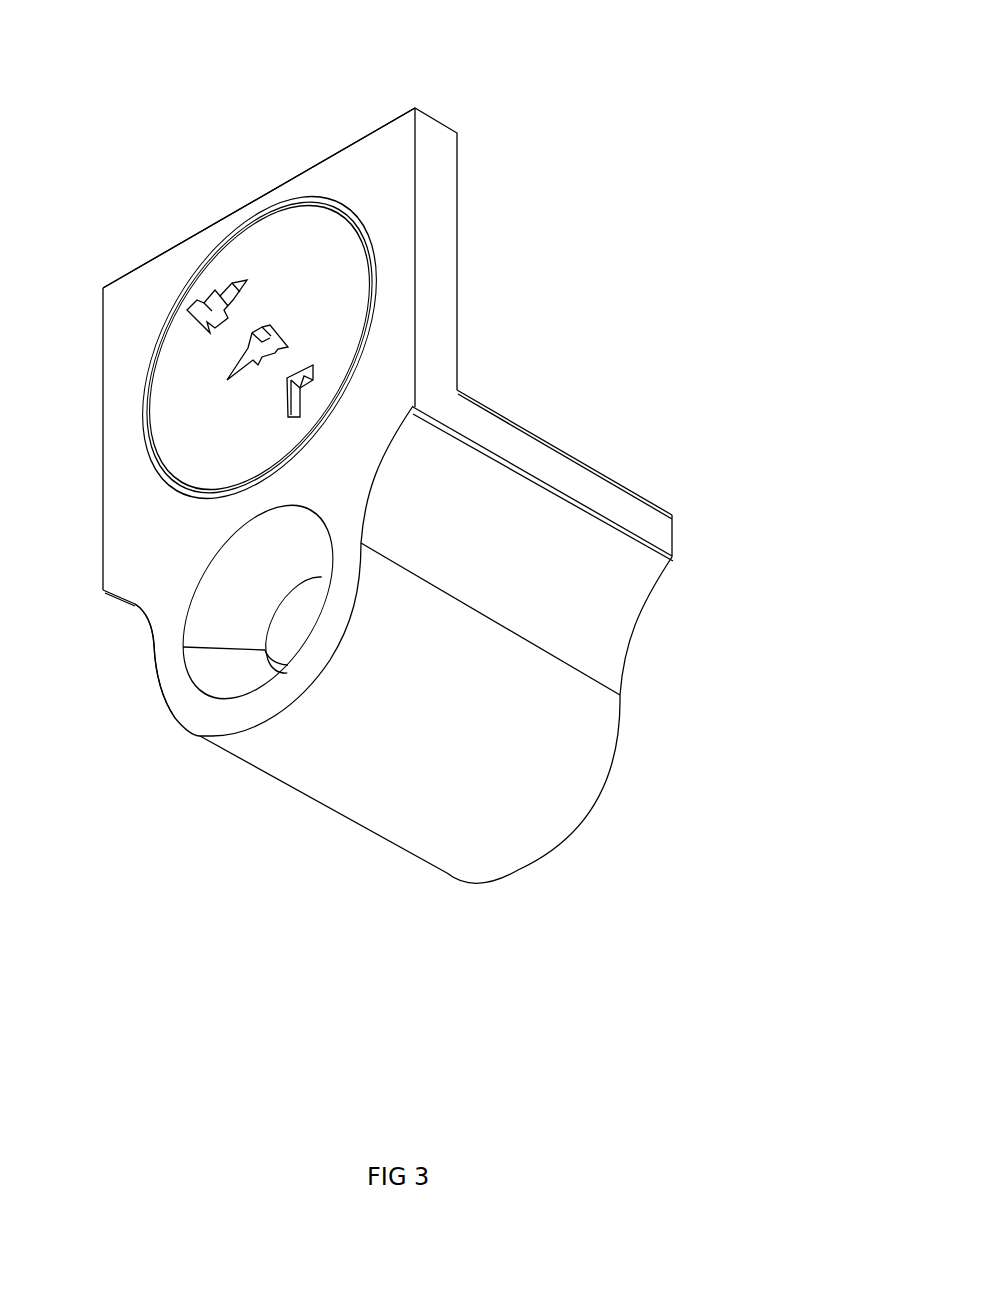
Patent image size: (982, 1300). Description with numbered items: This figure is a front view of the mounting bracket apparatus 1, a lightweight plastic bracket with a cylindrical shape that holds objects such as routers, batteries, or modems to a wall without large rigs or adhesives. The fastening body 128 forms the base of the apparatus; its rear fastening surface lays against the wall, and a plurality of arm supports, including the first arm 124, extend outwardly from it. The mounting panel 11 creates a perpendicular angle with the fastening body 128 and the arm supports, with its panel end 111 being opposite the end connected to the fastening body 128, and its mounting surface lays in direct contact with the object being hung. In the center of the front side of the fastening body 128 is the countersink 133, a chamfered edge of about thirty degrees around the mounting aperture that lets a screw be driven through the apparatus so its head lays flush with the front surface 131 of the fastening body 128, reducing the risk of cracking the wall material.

The mounting bracket apparatus 1 is at (548, 45).
The panel end 111 is at (326, 160).
The mounting panel 11 is at (183, 285).
The first arm 124 is at (625, 492).
The countersink 133 is at (185, 625).
The front surface 131 is at (158, 635).
The fastening body 128 is at (603, 780).